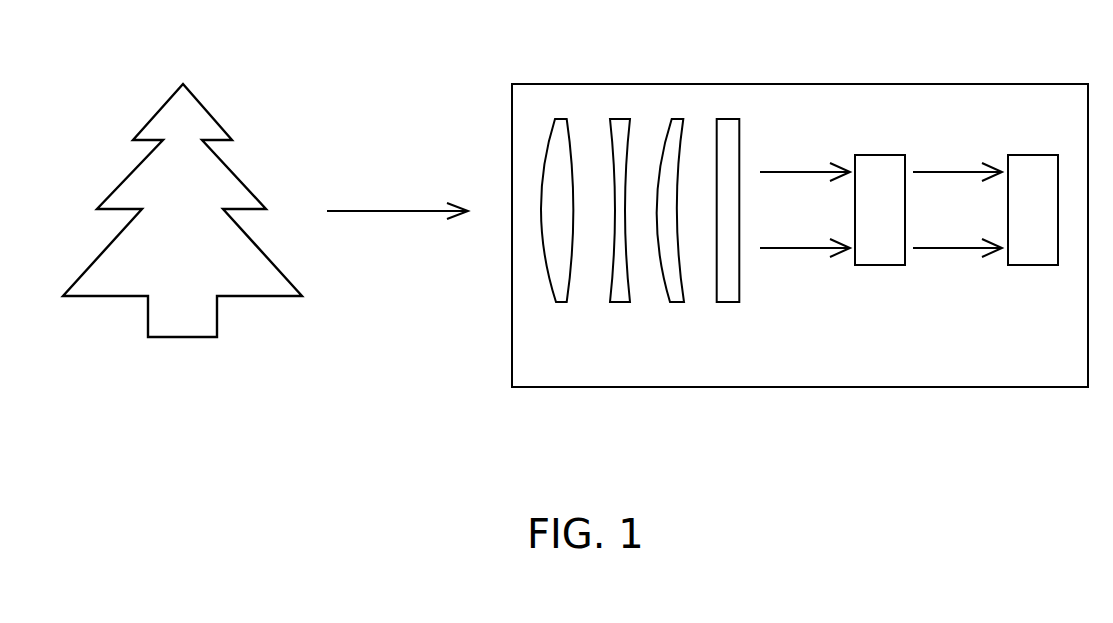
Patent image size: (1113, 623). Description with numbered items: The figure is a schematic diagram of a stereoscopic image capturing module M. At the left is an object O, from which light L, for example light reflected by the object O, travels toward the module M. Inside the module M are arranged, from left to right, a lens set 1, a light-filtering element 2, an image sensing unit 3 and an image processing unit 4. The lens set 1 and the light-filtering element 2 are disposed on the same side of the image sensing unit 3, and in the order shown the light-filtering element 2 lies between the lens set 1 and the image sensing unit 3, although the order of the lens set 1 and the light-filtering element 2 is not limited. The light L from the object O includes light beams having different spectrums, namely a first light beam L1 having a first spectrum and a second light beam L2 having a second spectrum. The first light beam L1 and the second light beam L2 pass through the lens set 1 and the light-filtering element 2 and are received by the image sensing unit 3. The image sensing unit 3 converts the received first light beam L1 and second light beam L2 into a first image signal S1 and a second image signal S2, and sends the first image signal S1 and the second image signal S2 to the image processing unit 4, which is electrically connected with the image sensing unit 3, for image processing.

The object O is at (157, 110).
The light L is at (397, 200).
The stereoscopic image capturing module M is at (802, 84).
The lens set 1 is at (698, 310).
The light-filtering element 2 is at (733, 325).
The first light beam L1 is at (805, 162).
The second light beam L2 is at (805, 261).
The image sensing unit 3 is at (887, 287).
The first image signal S1 is at (957, 162).
The second image signal S2 is at (957, 261).
The image processing unit 4 is at (1037, 287).